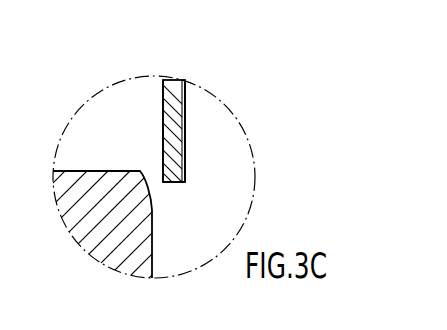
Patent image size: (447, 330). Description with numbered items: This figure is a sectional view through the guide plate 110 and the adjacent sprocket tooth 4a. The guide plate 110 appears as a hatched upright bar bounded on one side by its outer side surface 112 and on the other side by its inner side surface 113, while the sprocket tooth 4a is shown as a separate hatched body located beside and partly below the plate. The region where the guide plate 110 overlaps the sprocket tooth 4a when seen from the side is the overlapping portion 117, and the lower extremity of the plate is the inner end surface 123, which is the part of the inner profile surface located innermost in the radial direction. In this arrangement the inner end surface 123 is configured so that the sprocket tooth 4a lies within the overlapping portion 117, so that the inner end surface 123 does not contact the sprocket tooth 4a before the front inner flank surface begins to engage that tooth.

The sprocket tooth 4a is at (76, 218).
The guide plate 110 is at (174, 80).
The inner side surface 113 is at (163, 139).
The outer side surface 112 is at (185, 142).
The overlapping portion 117 is at (186, 169).
The inner end surface 123 is at (173, 182).